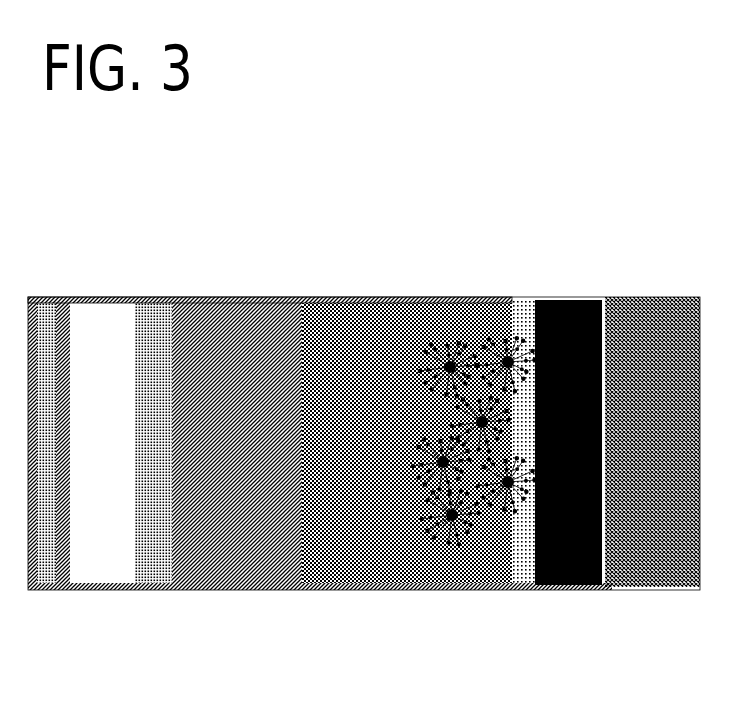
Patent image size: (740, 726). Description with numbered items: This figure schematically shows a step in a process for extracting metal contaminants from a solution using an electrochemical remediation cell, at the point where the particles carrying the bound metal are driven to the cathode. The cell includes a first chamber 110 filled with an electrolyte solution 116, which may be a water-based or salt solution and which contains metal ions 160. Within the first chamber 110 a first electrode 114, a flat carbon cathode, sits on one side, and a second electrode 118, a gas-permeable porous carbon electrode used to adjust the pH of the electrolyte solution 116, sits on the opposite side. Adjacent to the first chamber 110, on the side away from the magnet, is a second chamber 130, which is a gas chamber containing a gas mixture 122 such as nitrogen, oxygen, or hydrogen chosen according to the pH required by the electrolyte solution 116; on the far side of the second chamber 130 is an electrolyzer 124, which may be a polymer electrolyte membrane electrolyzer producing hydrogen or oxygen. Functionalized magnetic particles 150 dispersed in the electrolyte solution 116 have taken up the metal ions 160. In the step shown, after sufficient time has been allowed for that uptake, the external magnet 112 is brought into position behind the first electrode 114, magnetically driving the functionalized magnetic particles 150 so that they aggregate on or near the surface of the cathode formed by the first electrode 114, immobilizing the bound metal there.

The first chamber 110 is at (202, 358).
The external magnet 112 is at (648, 310).
The first electrode 114 is at (573, 300).
The electrolyte solution 116 is at (316, 540).
The second electrode 118 is at (162, 565).
The gas mixture 122 is at (110, 565).
The electrolyzer 124 is at (33, 565).
The second chamber 130 is at (120, 422).
The functionalized magnetic particles 150 is at (452, 521).
The metal ions 160 is at (353, 325).